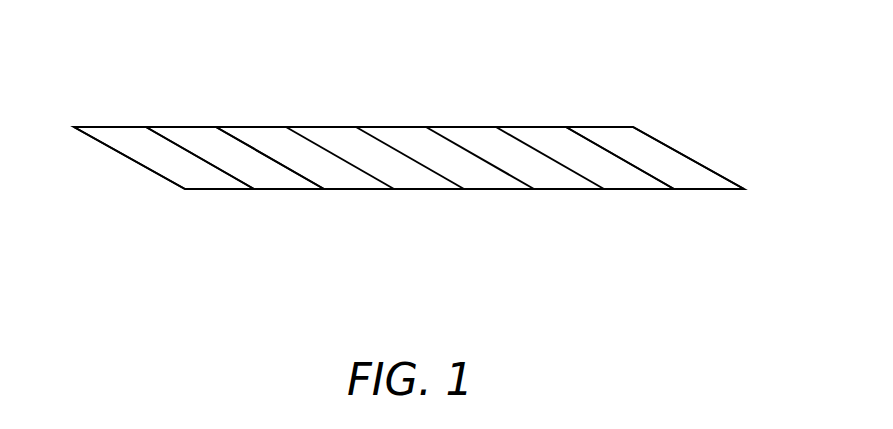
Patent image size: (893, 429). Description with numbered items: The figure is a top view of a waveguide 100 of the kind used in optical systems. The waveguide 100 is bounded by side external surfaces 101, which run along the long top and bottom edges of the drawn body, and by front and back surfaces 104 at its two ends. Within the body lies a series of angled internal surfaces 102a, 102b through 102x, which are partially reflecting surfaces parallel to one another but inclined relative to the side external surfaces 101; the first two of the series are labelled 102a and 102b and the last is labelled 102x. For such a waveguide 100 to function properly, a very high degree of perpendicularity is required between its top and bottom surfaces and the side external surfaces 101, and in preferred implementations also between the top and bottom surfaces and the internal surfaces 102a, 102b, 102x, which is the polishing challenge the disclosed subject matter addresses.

The waveguide 100 is at (666, 234).
The side external surfaces 101 is at (353, 113).
The angled internal surface 102a is at (203, 157).
The angled internal surface 102b is at (274, 157).
The angled internal surface 102x is at (618, 158).
The front and back surfaces 104 is at (697, 138).